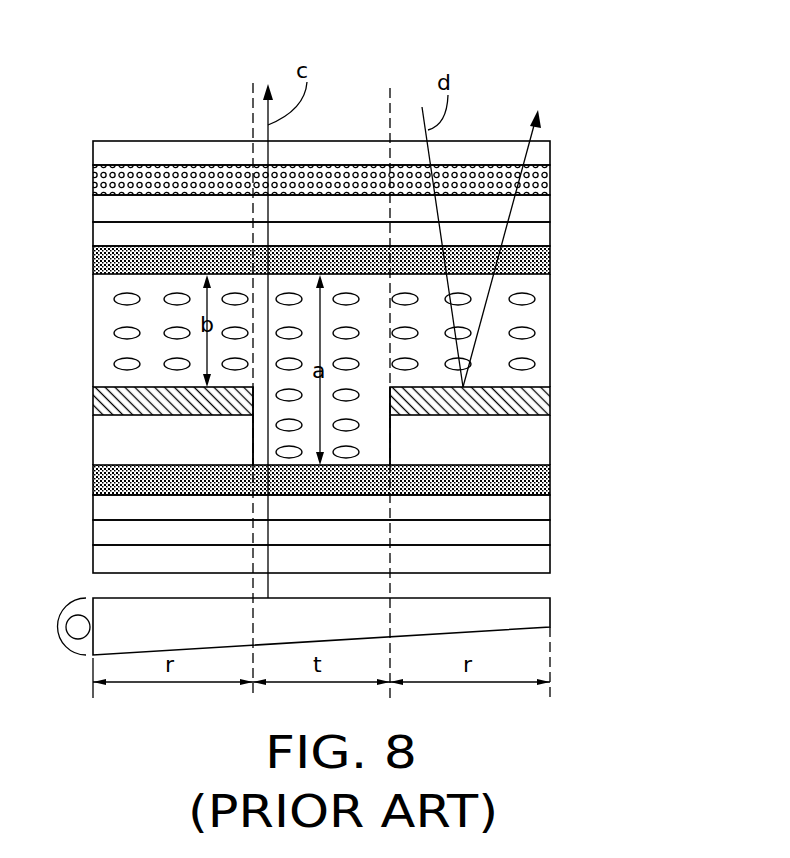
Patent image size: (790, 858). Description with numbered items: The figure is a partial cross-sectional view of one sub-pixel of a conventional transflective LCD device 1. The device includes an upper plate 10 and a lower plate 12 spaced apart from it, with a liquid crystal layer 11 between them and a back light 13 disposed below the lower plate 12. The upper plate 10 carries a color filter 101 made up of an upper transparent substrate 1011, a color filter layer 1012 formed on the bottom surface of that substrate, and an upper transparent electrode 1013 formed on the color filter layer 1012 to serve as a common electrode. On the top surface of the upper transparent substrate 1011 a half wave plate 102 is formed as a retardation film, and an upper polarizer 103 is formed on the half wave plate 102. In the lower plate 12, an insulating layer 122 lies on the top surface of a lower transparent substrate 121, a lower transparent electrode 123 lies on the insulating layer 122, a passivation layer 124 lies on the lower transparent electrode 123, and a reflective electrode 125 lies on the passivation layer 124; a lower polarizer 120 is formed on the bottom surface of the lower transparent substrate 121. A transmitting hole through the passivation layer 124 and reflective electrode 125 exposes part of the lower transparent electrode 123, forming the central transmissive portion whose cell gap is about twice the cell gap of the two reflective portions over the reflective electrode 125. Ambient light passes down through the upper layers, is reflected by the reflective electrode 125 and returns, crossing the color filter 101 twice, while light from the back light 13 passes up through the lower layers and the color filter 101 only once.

The transflective LCD device 1 is at (359, 35).
The upper plate 10 is at (78, 144).
The color filter 101 is at (664, 196).
The upper transparent substrate 1011 is at (537, 212).
The color filter layer 1012 is at (537, 241).
The upper transparent electrode 1013 is at (552, 263).
The half wave plate 102 is at (552, 184).
The upper polarizer 103 is at (537, 160).
The liquid crystal layer 11 is at (78, 276).
The lower plate 12 is at (78, 391).
The lower polarizer 120 is at (537, 563).
The lower transparent substrate 121 is at (537, 537).
The insulating layer 122 is at (537, 510).
The lower transparent electrode 123 is at (552, 483).
The passivation layer 124 is at (537, 445).
The reflective electrode 125 is at (552, 403).
The back light 13 is at (540, 616).